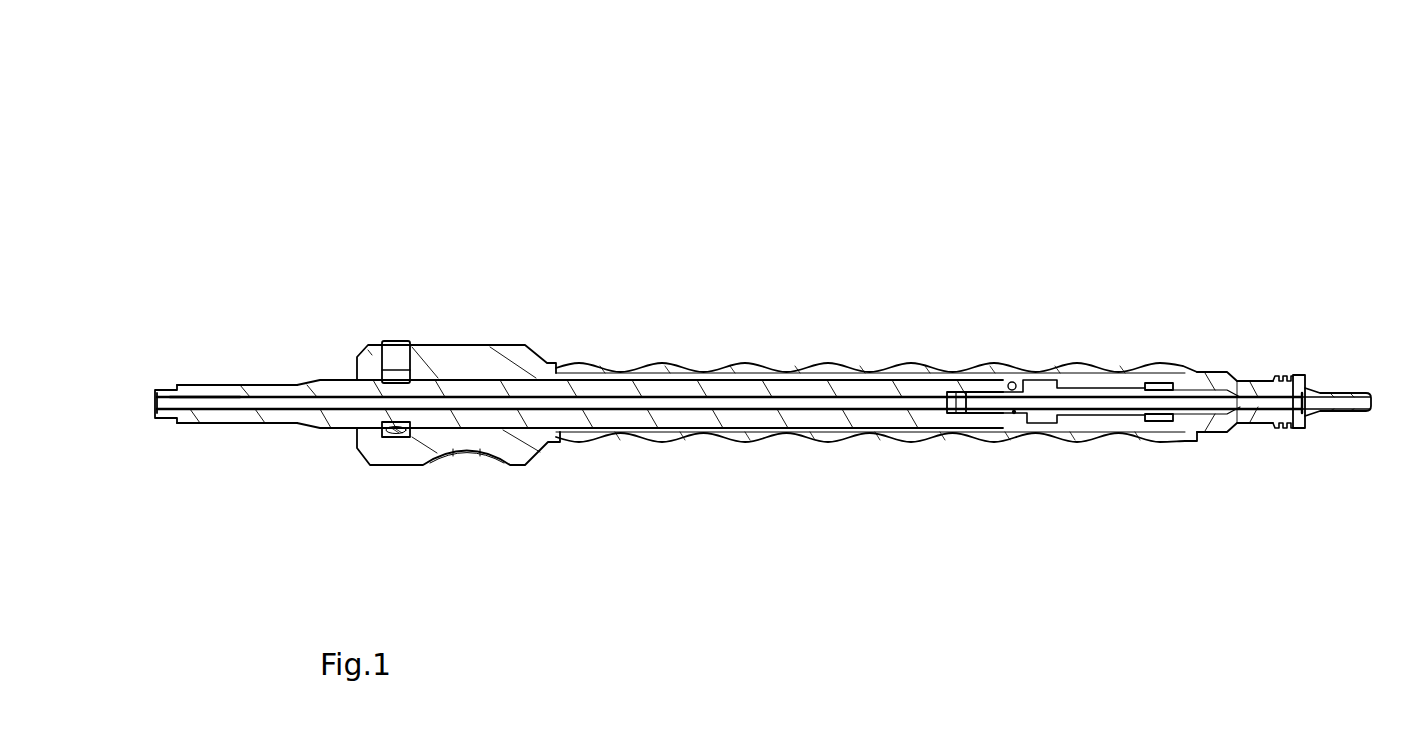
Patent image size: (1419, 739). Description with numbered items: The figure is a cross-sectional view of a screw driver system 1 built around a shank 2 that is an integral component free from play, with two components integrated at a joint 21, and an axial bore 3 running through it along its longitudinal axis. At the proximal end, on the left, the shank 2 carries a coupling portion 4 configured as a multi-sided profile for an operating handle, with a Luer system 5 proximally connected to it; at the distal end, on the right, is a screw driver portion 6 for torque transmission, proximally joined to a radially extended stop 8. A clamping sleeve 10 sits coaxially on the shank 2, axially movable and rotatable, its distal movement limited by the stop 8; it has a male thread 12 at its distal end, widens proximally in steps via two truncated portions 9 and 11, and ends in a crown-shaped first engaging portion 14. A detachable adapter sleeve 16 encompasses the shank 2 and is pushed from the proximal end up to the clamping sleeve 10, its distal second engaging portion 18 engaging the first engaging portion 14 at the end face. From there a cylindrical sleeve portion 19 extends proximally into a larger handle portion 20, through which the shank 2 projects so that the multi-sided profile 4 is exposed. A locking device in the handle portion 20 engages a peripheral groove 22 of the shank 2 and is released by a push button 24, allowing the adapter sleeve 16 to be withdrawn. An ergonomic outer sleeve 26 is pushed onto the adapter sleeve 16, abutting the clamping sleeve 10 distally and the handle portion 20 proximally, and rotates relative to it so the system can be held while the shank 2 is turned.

The screw driver system 1 is at (299, 114).
The shank 2 is at (323, 428).
The axial bore 3 is at (197, 400).
The coupling portion 4 is at (236, 423).
The Luer system 5 is at (150, 397).
The screw driver portion 6 is at (1348, 392).
The stop 8 is at (1302, 428).
The truncated portion 9 is at (1235, 427).
The clamping sleeve 10 is at (1205, 372).
The proximal truncated portion 11 is at (1208, 430).
The male thread 12 is at (1287, 378).
The first engaging portion 14 is at (1168, 427).
The adapter sleeve 16 is at (519, 468).
The second engaging portion 18 is at (1157, 383).
The sleeve portion 19 is at (795, 430).
The handle portion 20 is at (478, 345).
The joint 21 is at (1020, 418).
The peripheral groove 22 is at (410, 437).
The push button 24 is at (391, 340).
The outer sleeve 26 is at (681, 372).